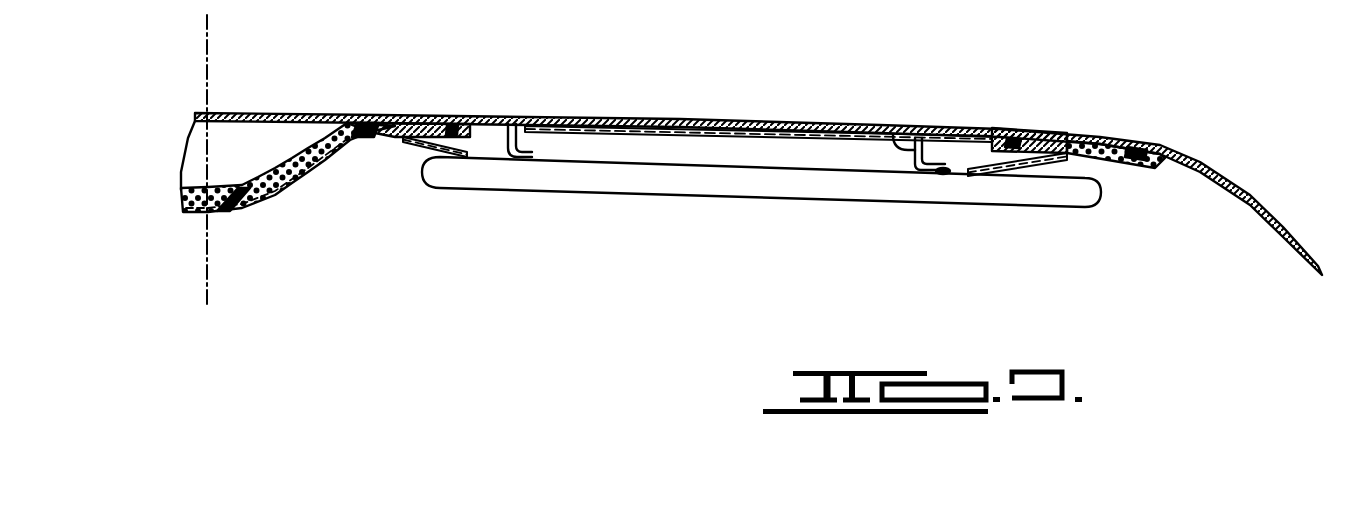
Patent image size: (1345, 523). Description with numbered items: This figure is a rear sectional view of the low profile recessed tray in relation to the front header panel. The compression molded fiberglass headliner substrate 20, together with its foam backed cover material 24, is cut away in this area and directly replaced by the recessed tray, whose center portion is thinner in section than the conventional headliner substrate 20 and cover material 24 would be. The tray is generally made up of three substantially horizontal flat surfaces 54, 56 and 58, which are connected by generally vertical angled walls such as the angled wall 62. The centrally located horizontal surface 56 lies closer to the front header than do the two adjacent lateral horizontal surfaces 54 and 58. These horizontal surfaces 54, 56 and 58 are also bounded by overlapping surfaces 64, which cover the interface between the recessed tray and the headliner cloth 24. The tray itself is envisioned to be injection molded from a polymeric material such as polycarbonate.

The headliner substrate 20 is at (271, 176).
The foam backed cover material 24 is at (285, 168).
The lateral horizontal surface 54 is at (969, 170).
The central horizontal surface 56 is at (785, 150).
The lateral horizontal surface 58 is at (466, 150).
The angled wall 62 is at (527, 138).
The overlapping surface 64 is at (412, 138).